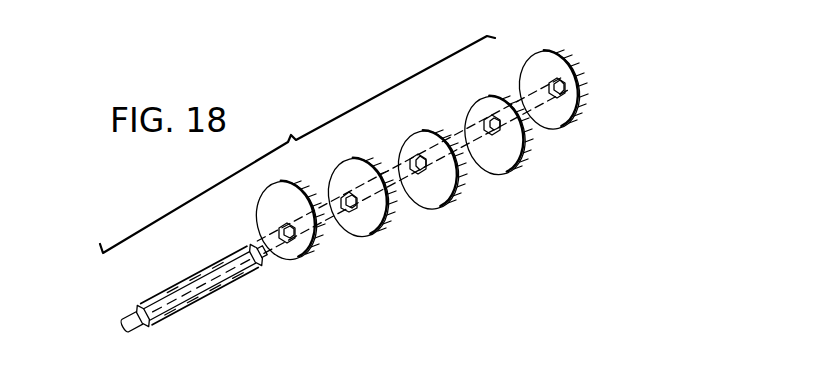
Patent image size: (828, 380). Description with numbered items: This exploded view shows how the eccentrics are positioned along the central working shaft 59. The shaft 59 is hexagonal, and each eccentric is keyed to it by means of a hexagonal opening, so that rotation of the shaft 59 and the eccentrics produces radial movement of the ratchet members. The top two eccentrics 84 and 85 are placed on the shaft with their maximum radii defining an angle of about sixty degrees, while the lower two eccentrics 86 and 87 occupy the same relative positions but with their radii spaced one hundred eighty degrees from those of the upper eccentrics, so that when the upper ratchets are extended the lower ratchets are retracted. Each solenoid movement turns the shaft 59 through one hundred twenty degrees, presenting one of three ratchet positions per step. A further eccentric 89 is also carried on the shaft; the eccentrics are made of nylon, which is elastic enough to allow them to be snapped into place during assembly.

The central working shaft 59 is at (202, 292).
The eccentric 84 is at (567, 117).
The eccentric 85 is at (502, 165).
The eccentric 86 is at (435, 197).
The eccentric 87 is at (375, 228).
The eccentric 89 is at (302, 256).